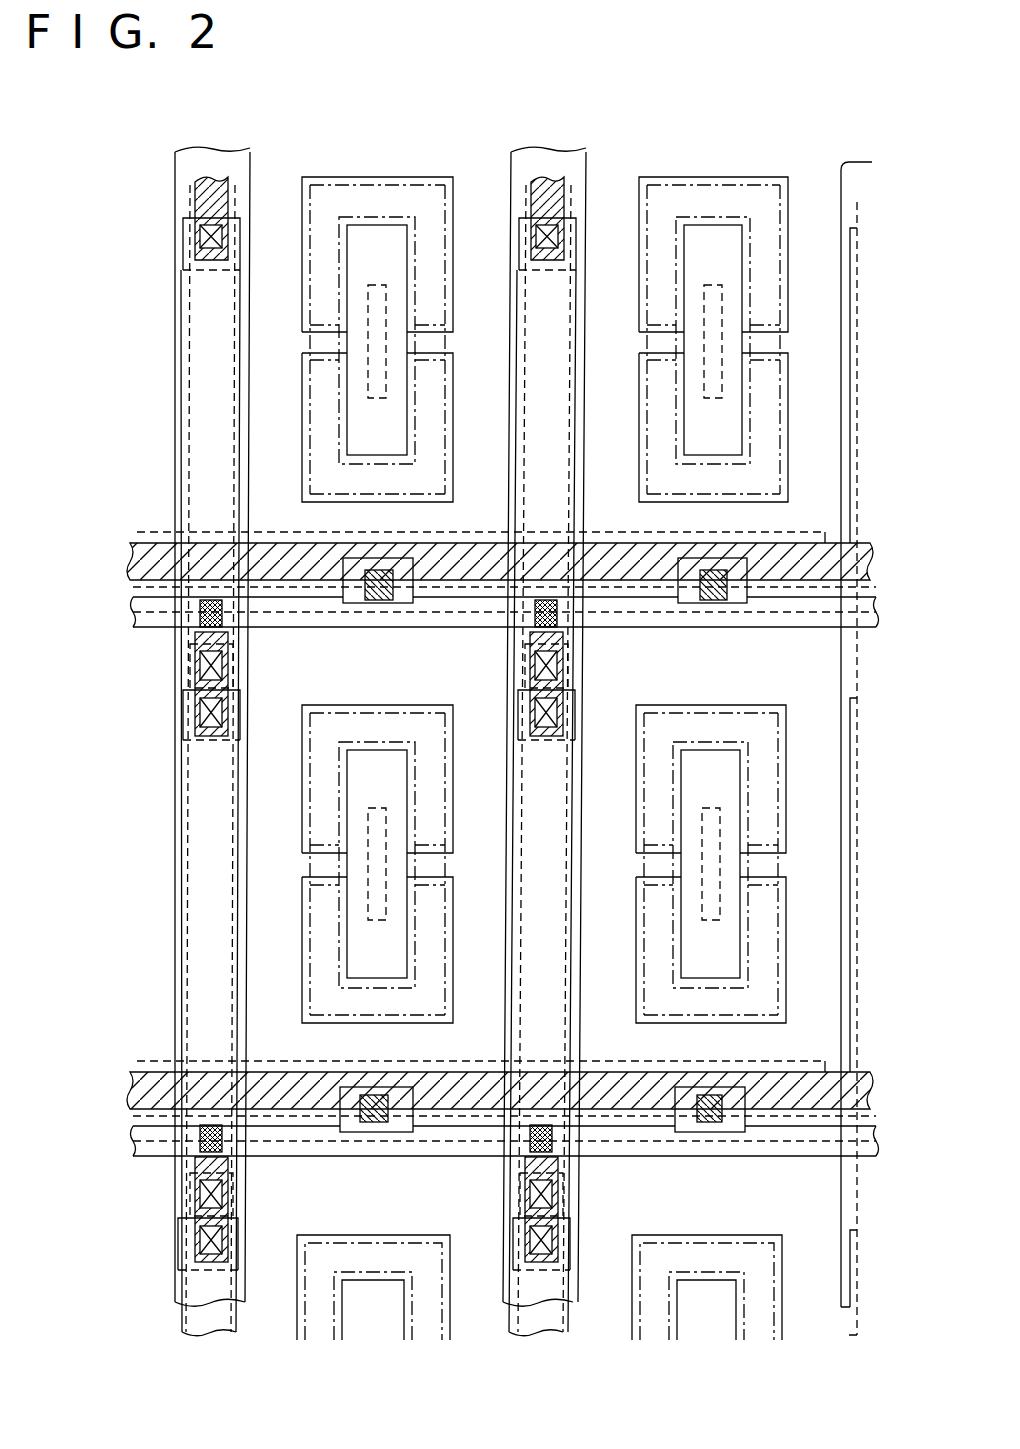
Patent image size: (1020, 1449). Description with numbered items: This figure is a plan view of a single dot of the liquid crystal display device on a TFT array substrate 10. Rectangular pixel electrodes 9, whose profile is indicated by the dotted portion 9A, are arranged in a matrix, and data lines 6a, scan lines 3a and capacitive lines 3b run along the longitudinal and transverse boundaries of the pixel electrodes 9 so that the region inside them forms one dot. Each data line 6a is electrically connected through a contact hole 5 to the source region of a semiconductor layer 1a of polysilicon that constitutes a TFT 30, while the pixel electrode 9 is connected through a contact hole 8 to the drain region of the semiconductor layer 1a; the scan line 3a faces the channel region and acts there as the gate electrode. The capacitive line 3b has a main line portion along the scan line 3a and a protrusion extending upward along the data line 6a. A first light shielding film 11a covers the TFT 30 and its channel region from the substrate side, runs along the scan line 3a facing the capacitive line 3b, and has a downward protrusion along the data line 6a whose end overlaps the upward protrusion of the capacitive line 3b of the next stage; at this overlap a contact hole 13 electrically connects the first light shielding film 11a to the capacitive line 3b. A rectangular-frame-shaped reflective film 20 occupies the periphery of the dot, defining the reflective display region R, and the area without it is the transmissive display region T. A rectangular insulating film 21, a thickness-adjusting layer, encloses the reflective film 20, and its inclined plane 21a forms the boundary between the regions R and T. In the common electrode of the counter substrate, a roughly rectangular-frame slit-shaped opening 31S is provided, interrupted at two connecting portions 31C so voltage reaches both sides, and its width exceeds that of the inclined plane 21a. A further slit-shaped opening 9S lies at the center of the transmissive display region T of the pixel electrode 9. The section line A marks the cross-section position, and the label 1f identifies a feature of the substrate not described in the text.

The TFT array substrate 10 is at (484, 190).
The data line 6a is at (588, 668).
The contact hole 13 is at (202, 712).
The reflective display region R is at (284, 685).
The slit-shaped opening 31S is at (440, 905).
The first light shielding film 11a is at (220, 1070).
The dotted portion 9A is at (752, 615).
The pixel electrode 9 is at (822, 688).
The TFT substrate region 1f is at (176, 772).
The insulating film 21 is at (258, 840).
The inclined plane 21a is at (316, 897).
The reflective film 20 is at (258, 918).
The connecting portion 31C is at (505, 830).
The transmissive display region T is at (387, 793).
The slit-shaped opening 9S is at (378, 826).
The section line A-A' A is at (827, 797).
The capacitive line 3b is at (748, 1072).
The TFT 30 is at (263, 1207).
The scan line 3a is at (452, 1157).
The semiconductor layer 1a is at (550, 1146).
The contact hole 5 is at (563, 1203).
The contact hole 8 is at (705, 1127).